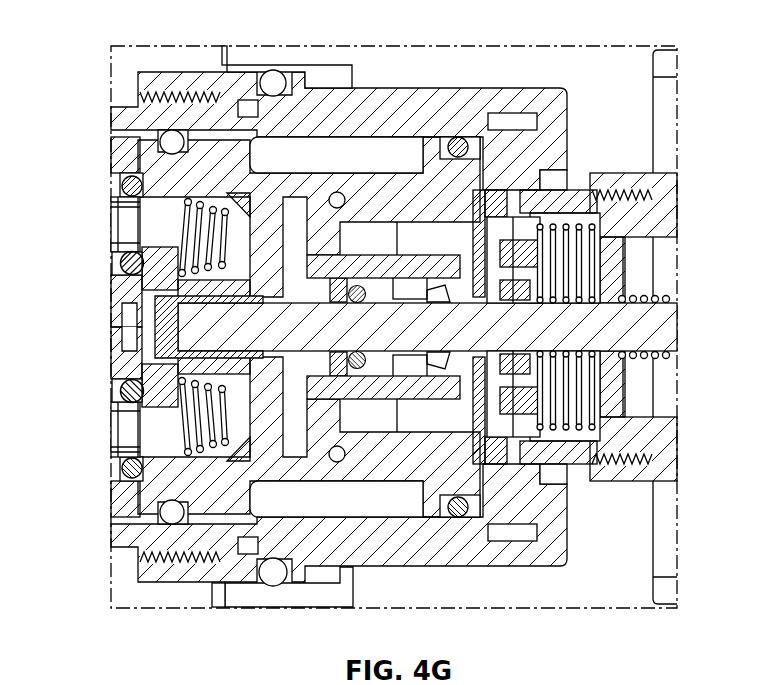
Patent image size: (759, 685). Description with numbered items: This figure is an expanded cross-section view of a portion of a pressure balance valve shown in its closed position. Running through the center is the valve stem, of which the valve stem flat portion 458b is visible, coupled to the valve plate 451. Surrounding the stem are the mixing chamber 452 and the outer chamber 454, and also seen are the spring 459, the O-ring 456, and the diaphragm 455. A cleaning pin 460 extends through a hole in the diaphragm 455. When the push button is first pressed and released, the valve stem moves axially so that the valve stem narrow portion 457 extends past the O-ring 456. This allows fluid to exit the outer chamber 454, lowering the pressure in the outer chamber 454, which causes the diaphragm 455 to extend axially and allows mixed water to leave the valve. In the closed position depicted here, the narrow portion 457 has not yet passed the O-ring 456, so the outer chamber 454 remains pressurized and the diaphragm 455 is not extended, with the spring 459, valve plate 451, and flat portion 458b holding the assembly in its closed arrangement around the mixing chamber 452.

The valve plate 451 is at (250, 368).
The mixing chamber 452 is at (357, 237).
The outer chamber 454 is at (548, 440).
The diaphragm 455 is at (478, 248).
The O-ring 456 is at (522, 293).
The valve stem narrow portion 457 is at (483, 403).
The valve stem flat portion 458b is at (192, 325).
The spring 459 is at (598, 412).
The cleaning pin 460 is at (553, 428).